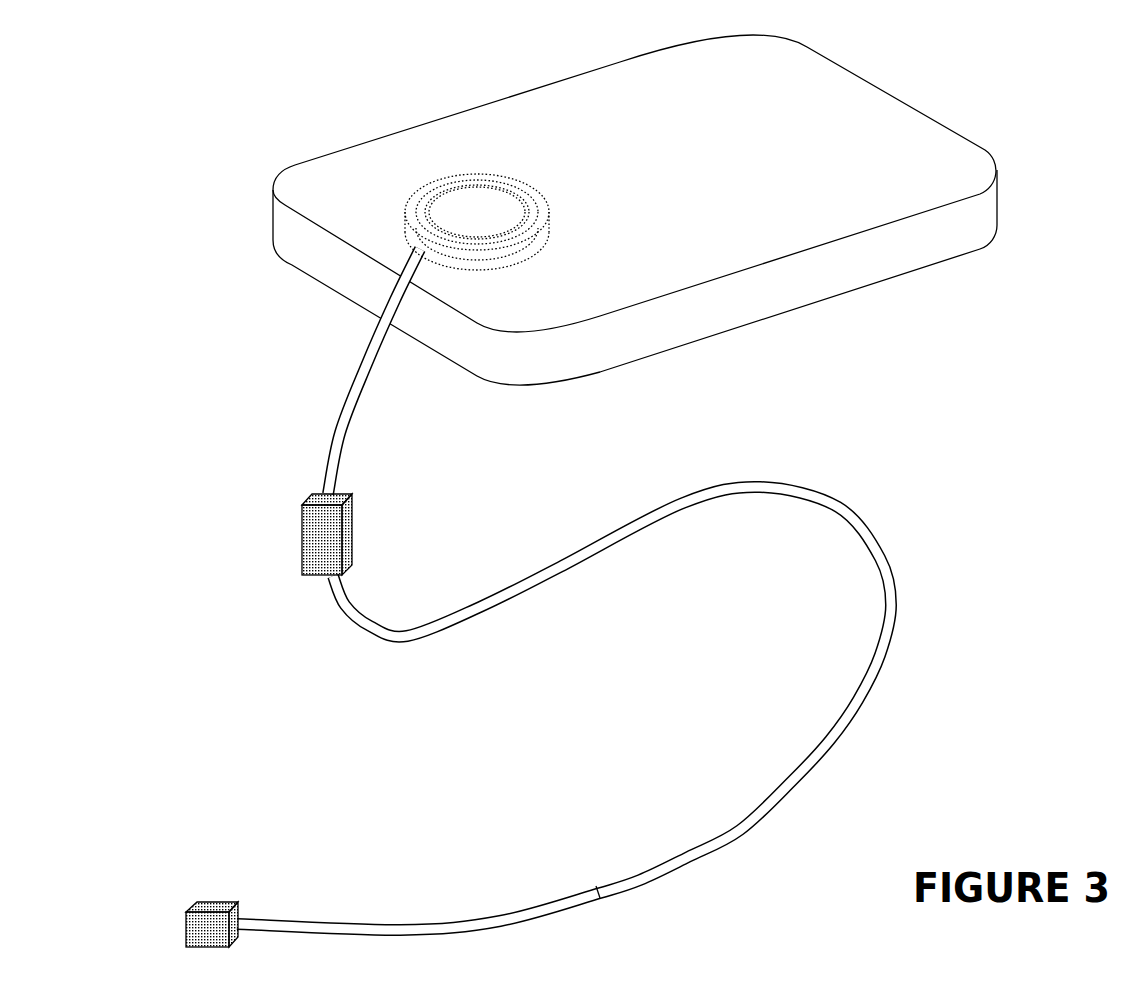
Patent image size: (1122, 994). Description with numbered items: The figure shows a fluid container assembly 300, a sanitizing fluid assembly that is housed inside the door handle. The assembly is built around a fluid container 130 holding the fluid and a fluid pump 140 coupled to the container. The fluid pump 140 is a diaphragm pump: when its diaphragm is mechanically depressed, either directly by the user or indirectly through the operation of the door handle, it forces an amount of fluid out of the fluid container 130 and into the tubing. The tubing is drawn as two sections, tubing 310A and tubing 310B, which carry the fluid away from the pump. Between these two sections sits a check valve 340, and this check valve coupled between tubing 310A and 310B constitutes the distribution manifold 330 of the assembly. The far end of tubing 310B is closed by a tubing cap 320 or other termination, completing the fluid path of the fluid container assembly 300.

The fluid container assembly 300 is at (160, 142).
The fluid container 130 is at (608, 105).
The fluid pump 140 is at (478, 203).
The tubing 310A is at (342, 395).
The tubing 310B is at (845, 510).
The check valve 340 is at (315, 535).
The tubing cap 320 is at (205, 922).
The distribution manifold 330 is at (389, 852).